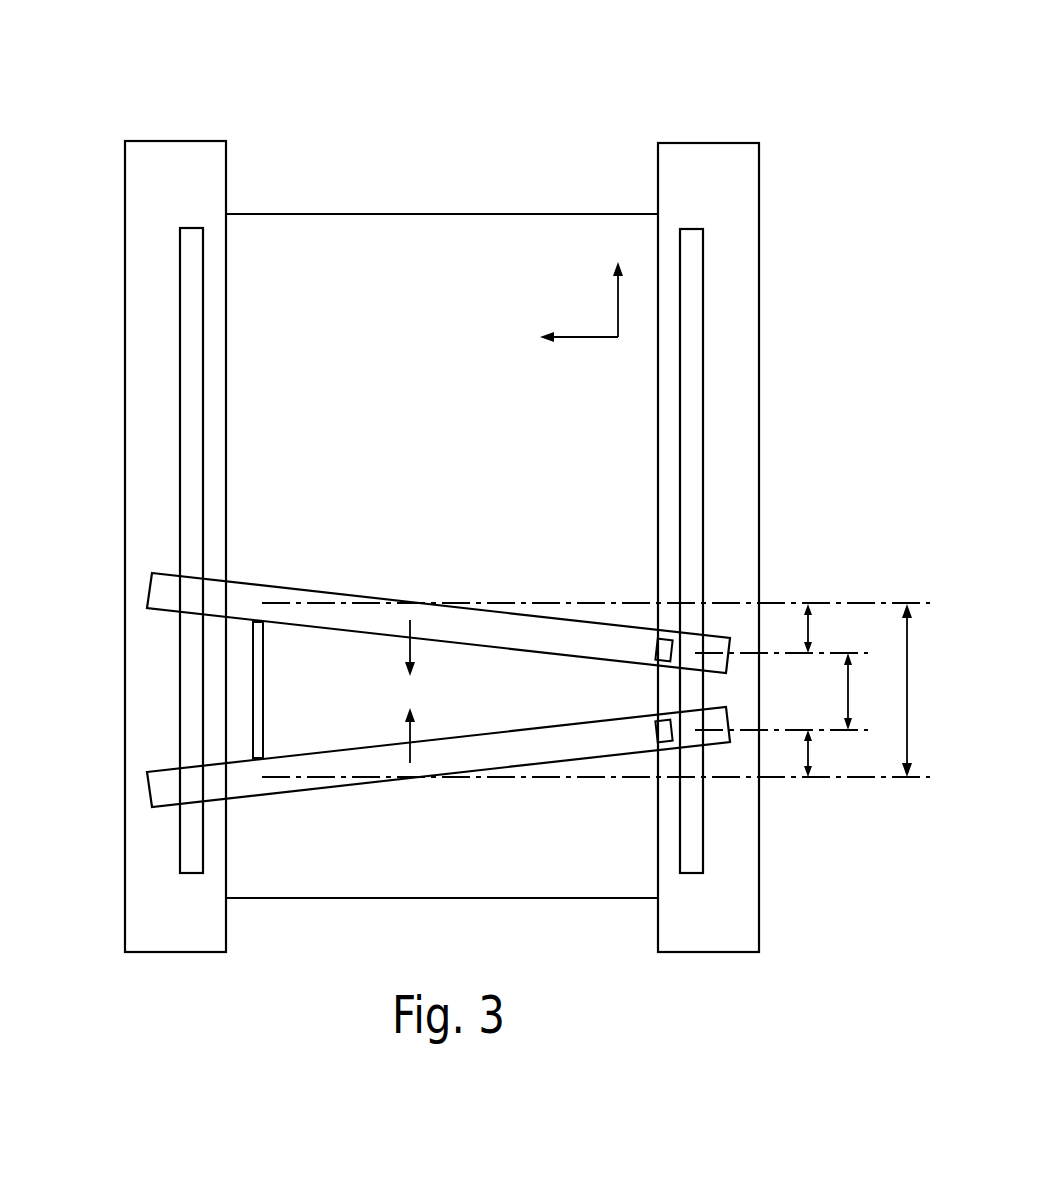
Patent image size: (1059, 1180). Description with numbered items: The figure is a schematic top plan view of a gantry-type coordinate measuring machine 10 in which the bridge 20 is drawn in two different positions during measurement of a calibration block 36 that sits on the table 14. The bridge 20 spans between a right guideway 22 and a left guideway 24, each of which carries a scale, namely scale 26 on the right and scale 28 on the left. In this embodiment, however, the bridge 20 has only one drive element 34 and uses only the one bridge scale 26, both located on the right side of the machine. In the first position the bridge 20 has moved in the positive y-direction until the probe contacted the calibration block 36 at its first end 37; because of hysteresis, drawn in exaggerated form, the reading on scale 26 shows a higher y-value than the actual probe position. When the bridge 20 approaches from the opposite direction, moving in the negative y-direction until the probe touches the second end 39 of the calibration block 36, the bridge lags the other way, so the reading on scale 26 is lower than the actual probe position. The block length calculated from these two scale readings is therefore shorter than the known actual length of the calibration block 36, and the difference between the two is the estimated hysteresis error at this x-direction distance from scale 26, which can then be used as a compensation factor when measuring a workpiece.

The coordinate measuring machine 10 is at (612, 94).
The table 14 is at (447, 436).
The bridge 20 is at (165, 592).
The right guideway 22 is at (708, 155).
The left guideway 24 is at (162, 156).
The scale 26 is at (693, 244).
The scale 28 is at (192, 240).
The drive element 34 is at (657, 650).
The calibration block 36 is at (258, 672).
The first end 37 is at (264, 757).
The second end 39 is at (264, 624).